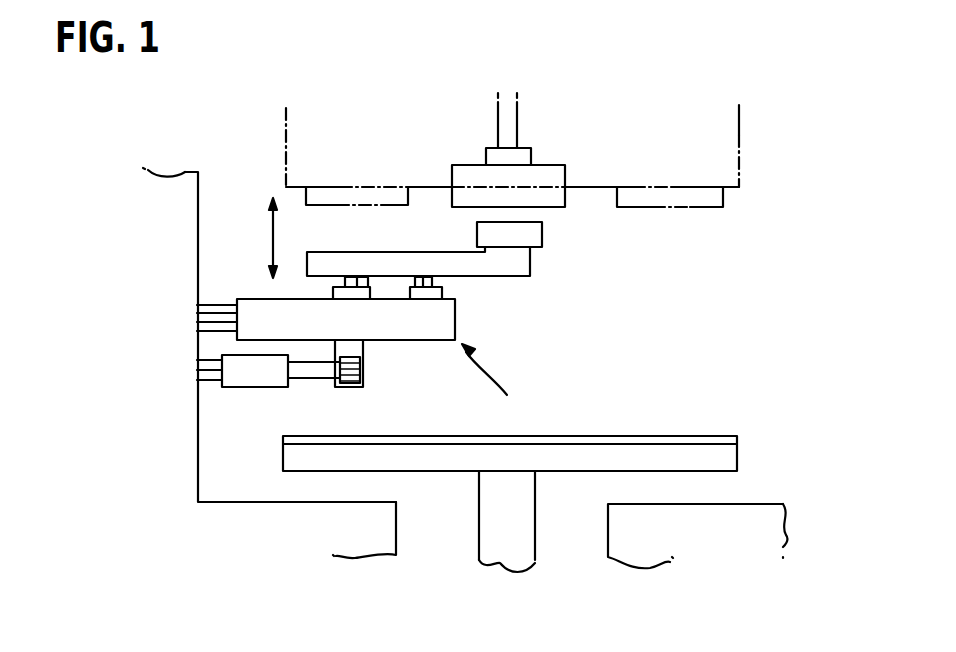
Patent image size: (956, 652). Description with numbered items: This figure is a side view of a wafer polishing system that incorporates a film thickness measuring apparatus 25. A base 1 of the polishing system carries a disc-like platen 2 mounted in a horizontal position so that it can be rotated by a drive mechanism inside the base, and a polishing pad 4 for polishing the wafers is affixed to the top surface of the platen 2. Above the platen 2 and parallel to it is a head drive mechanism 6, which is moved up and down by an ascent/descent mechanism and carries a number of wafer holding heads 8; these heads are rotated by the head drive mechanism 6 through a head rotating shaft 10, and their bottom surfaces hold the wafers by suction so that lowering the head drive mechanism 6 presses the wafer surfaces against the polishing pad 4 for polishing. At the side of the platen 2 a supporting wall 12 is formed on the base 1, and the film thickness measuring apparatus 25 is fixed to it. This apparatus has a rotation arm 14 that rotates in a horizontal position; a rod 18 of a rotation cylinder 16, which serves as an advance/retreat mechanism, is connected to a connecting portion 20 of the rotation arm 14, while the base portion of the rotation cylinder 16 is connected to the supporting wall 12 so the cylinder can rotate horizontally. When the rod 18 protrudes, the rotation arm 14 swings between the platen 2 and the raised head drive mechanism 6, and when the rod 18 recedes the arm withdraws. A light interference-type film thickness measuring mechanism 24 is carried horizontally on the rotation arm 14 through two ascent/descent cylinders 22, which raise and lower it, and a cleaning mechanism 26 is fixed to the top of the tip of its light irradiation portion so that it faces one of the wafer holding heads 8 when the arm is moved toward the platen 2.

The base 1 is at (773, 503).
The platen 2 is at (677, 438).
The polishing pad 4 is at (623, 437).
The head drive mechanism 6 is at (740, 122).
The wafer holding head 8 is at (340, 205).
The head rotating shaft 10 is at (518, 108).
The supporting wall 12 is at (185, 170).
The rotation arm 14 is at (455, 313).
The rotation cylinder 16 is at (233, 390).
The rod 18 is at (305, 382).
The connecting portion 20 is at (370, 350).
The ascent/descent cylinders 22 is at (410, 293).
The light interference-type film thickness measuring mechanism 24 is at (530, 263).
The cleaning mechanism 26 is at (542, 230).
The film thickness measuring apparatus 25 is at (542, 413).